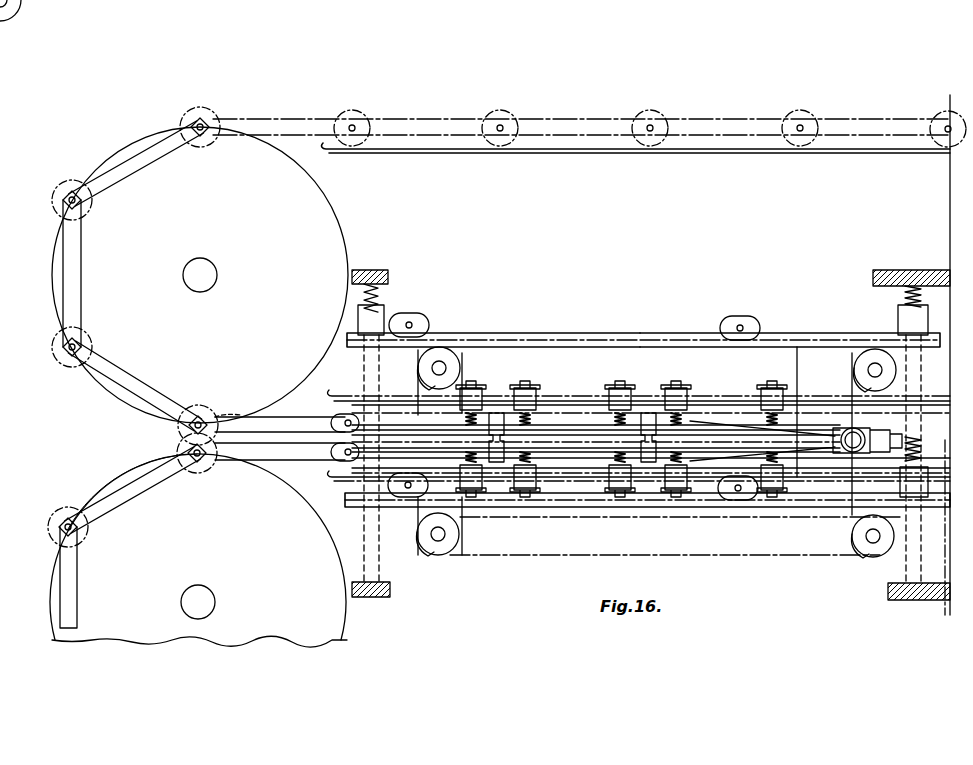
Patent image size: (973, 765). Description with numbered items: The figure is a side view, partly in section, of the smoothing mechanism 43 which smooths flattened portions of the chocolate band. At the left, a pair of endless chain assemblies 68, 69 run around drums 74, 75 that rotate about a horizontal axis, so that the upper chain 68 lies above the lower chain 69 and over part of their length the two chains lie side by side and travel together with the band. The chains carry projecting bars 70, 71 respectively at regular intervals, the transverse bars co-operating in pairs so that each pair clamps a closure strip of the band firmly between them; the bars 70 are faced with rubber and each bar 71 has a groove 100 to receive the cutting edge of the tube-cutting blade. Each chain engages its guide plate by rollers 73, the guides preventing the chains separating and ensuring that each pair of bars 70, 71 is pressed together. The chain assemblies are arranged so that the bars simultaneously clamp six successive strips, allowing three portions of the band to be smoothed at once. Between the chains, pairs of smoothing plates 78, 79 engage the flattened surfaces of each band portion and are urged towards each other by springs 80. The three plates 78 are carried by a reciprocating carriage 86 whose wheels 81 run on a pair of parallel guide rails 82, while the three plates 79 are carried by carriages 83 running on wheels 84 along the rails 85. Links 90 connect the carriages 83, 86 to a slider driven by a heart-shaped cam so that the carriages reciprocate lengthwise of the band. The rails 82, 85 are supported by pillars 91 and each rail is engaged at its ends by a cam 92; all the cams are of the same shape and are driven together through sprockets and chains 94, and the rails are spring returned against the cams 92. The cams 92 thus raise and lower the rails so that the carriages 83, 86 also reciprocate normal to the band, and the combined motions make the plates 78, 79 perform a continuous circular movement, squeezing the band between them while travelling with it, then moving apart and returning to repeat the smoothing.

The smoothing mechanism 43 is at (534, 324).
The endless chain assembly 68 is at (452, 150).
The endless chain assembly 69 is at (293, 455).
The projecting bar 70 is at (190, 124).
The projecting bar 71 is at (183, 452).
The roller 73 is at (789, 146).
The drum 74 is at (346, 610).
The drum 75 is at (345, 233).
The plate 78 is at (392, 403).
The plate 79 is at (448, 460).
The spring 80 is at (480, 408).
The wheel 81 is at (412, 314).
The guide rail 82 is at (812, 333).
The carriage 83 is at (592, 465).
The wheel 84 is at (408, 498).
The rail 85 is at (748, 506).
The reciprocating carriage 86 is at (595, 333).
The link 90 is at (810, 415).
The pillar 91 is at (362, 361).
The cam 92 is at (445, 348).
The chain 94 is at (600, 400).
The groove 100 is at (73, 512).